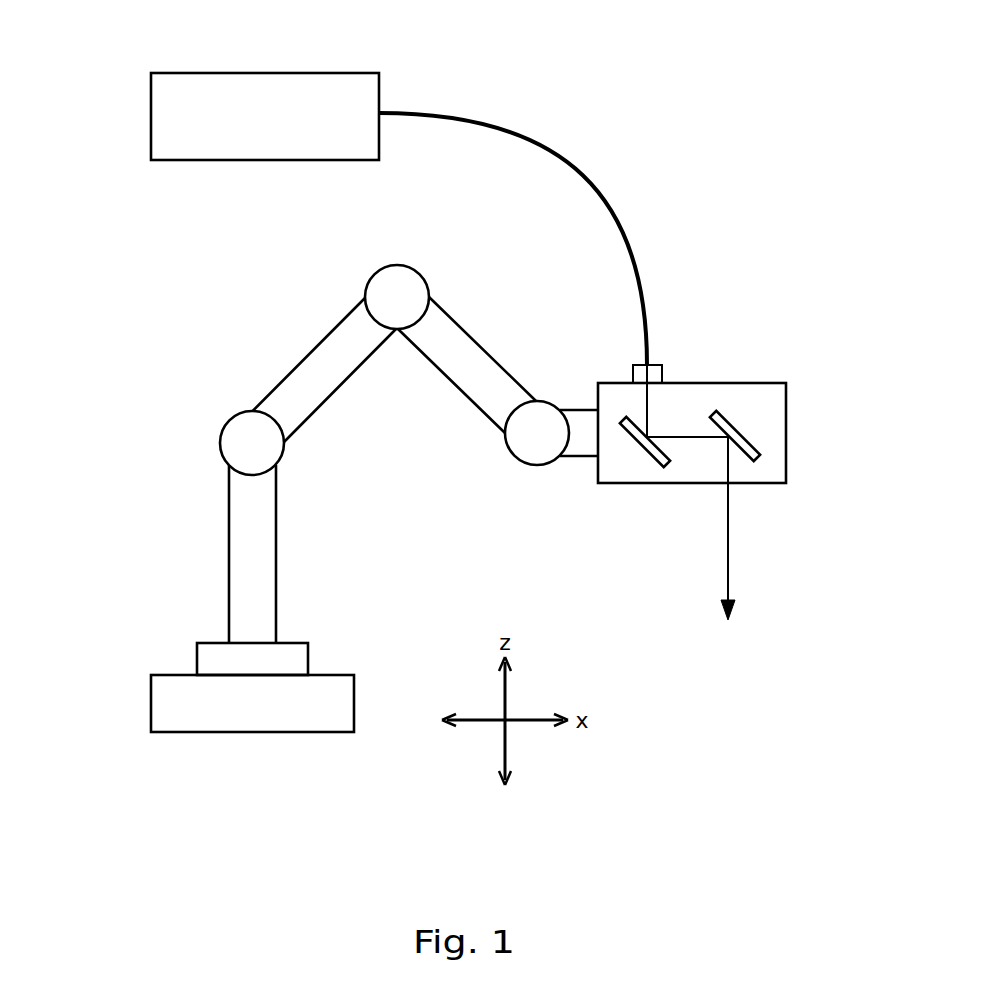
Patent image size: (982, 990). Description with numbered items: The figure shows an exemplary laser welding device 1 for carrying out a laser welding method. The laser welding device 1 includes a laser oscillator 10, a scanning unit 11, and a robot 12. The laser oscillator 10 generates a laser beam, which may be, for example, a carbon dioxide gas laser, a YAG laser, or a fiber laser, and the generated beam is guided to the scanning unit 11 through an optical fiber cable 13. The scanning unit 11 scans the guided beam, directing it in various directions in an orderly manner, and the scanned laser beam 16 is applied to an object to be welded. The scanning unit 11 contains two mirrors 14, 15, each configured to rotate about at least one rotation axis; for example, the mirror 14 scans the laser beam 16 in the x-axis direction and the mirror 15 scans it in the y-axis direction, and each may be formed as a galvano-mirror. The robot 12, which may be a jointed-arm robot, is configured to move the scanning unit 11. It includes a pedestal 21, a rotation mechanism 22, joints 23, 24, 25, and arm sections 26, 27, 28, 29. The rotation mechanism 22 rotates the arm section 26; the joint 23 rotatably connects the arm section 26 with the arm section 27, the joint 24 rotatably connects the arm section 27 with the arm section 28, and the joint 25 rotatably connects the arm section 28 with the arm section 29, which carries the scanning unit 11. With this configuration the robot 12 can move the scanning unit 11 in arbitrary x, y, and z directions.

The laser welding device 1 is at (708, 93).
The laser oscillator 10 is at (340, 73).
The scanning unit 11 is at (770, 383).
The robot 12 is at (188, 338).
The optical fiber cable 13 is at (641, 262).
The mirror 14 is at (640, 447).
The mirror 15 is at (750, 438).
The laser beam 16 is at (730, 530).
The pedestal 21 is at (151, 700).
The rotation mechanism 22 is at (197, 658).
The joint 23 is at (222, 432).
The joint 24 is at (375, 276).
The joint 25 is at (517, 461).
The arm section 26 is at (229, 550).
The arm section 27 is at (315, 348).
The arm section 28 is at (475, 335).
The arm section 29 is at (577, 411).